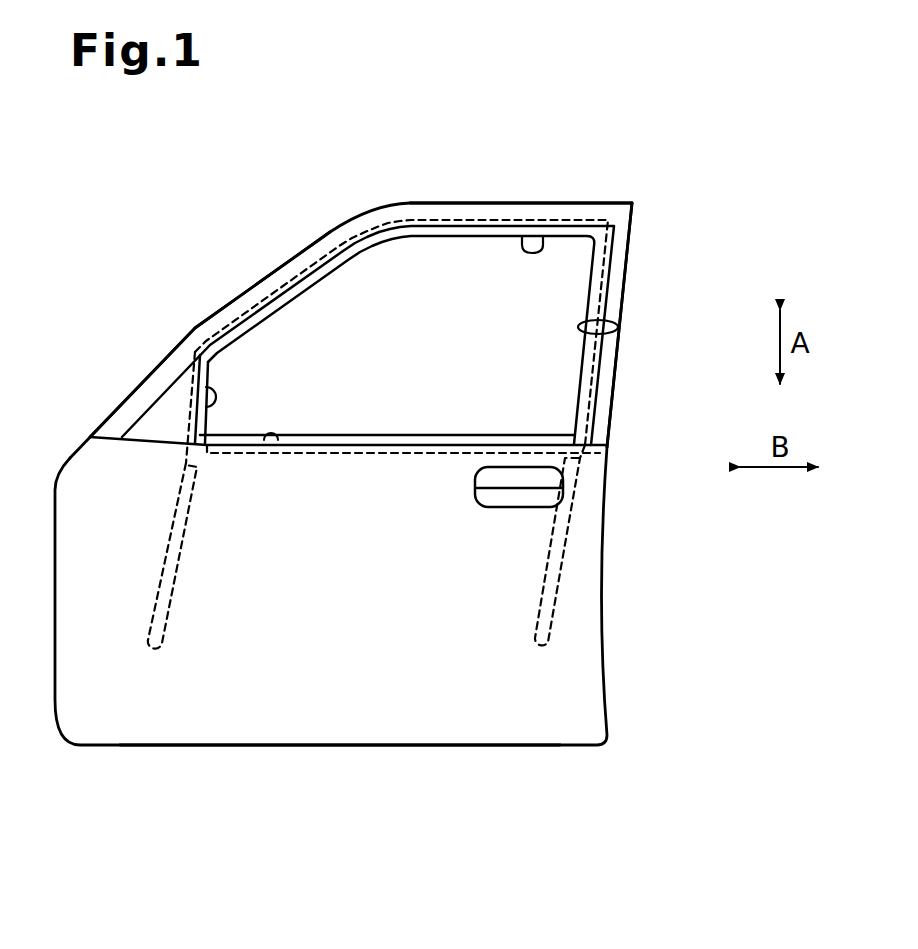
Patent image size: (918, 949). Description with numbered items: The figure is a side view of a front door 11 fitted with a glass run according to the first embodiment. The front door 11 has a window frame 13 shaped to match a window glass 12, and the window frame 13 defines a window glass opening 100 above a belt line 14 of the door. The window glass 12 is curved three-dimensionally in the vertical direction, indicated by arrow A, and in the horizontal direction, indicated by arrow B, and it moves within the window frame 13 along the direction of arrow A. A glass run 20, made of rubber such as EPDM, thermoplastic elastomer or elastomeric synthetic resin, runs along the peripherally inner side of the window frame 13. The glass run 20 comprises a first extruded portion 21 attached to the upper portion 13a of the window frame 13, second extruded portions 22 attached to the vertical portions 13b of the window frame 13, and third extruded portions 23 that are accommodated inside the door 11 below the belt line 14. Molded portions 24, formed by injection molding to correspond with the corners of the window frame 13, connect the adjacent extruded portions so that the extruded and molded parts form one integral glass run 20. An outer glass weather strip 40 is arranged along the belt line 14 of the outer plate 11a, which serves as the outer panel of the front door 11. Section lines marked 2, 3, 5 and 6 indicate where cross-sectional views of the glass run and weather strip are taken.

The front door 11 is at (485, 745).
The outer plate 11a is at (287, 727).
The window glass 12 is at (458, 423).
The window frame 13 is at (292, 258).
The upper portion of the window frame 13a is at (400, 212).
The vertical portions of the window frame 13b is at (160, 423).
The belt line 14 is at (272, 440).
The glass run 20 is at (390, 331).
The first extruded portion 21 is at (540, 240).
The second extruded portions 22 is at (207, 383).
The third extruded portions 23 is at (173, 593).
The molded portions 24 is at (213, 350).
The outer glass weather strip 40 is at (420, 430).
The window glass opening 100 is at (290, 295).
The section line 2 is at (673, 303).
The section line 3 is at (653, 415).
The section line 5 is at (432, 283).
The section line 6 is at (387, 380).